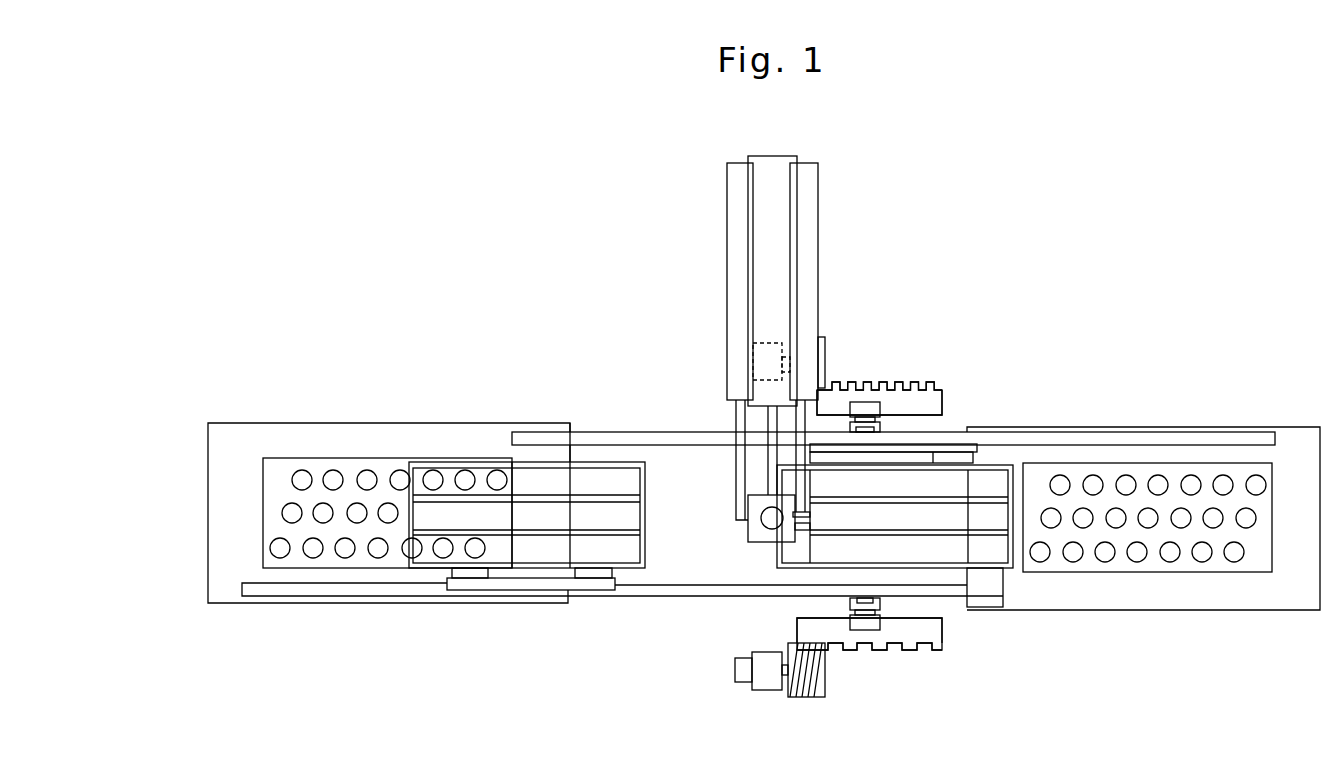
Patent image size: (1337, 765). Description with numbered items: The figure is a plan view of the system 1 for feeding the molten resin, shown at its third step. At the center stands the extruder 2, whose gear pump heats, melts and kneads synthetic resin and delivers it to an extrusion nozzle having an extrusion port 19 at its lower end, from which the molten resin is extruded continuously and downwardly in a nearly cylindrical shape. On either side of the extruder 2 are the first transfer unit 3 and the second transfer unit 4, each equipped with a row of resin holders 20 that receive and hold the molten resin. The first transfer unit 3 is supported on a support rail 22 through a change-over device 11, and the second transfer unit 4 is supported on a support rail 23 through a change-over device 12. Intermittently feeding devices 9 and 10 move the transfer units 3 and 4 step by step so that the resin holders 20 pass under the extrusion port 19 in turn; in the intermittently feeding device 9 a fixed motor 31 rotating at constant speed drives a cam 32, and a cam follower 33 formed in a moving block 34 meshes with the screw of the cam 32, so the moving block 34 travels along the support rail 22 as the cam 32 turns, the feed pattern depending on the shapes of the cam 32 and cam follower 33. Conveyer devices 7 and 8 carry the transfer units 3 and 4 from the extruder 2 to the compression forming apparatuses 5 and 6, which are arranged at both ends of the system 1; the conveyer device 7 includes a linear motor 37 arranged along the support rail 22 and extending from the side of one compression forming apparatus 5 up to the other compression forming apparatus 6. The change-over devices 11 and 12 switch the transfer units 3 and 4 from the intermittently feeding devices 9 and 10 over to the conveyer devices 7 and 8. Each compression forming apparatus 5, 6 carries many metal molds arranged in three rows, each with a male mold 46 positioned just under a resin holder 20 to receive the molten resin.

The system for feeding the molten resin 1 is at (1123, 170).
The extruder 2 is at (818, 202).
The first transfer unit 3 is at (653, 483).
The second transfer unit 4 is at (992, 575).
The compression forming apparatus 5 is at (287, 422).
The compression forming apparatus 6 is at (1257, 613).
The conveyer device 7 is at (503, 590).
The conveyer device 8 is at (953, 440).
The intermittently feeding device 9 is at (923, 653).
The intermittently feeding device 10 is at (918, 373).
The change-over device 11 is at (590, 578).
The change-over device 12 is at (830, 458).
The extrusion port 19 is at (762, 518).
The resin holders 20 is at (627, 530).
The support rail 22 is at (340, 596).
The support rail 23 is at (633, 438).
The motor 31 is at (768, 678).
The cam 32 is at (818, 700).
The cam follower 33 is at (863, 382).
The moving block 34 is at (902, 397).
The linear motor 37 is at (758, 515).
The male mold 46 is at (333, 473).